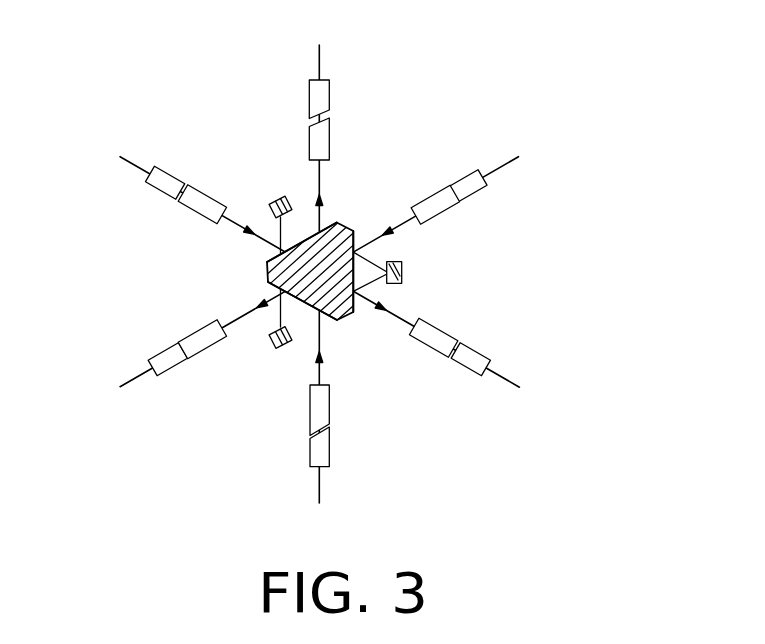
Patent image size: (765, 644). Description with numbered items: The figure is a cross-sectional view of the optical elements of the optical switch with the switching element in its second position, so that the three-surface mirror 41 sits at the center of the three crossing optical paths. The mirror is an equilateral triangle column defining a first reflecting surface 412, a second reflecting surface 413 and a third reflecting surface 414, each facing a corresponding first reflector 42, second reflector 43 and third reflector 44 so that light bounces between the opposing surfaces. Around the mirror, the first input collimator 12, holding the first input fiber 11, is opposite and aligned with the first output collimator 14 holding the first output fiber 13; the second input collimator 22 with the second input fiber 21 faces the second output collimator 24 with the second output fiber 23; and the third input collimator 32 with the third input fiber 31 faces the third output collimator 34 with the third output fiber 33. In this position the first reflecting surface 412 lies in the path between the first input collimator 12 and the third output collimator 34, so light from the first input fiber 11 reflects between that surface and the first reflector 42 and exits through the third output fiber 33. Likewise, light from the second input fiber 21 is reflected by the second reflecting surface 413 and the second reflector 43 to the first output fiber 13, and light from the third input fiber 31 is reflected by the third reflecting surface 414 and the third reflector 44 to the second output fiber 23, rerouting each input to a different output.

The first input fiber 11 is at (320, 477).
The first input collimator 12 is at (329, 403).
The first output fiber 13 is at (322, 58).
The first output collimator 14 is at (330, 131).
The second input fiber 21 is at (128, 158).
The second input collimator 22 is at (205, 192).
The second output fiber 23 is at (503, 378).
The second output collimator 24 is at (435, 330).
The third input fiber 31 is at (505, 164).
The third input collimator 32 is at (445, 215).
The third output fiber 33 is at (128, 378).
The third output collimator 34 is at (195, 332).
The three-surface mirror 41 is at (344, 279).
The first reflecting surface 412 is at (328, 324).
The second reflecting surface 413 is at (332, 222).
The third reflecting surface 414 is at (357, 250).
The first reflector 42 is at (280, 347).
The second reflector 43 is at (276, 198).
The third reflector 44 is at (403, 272).